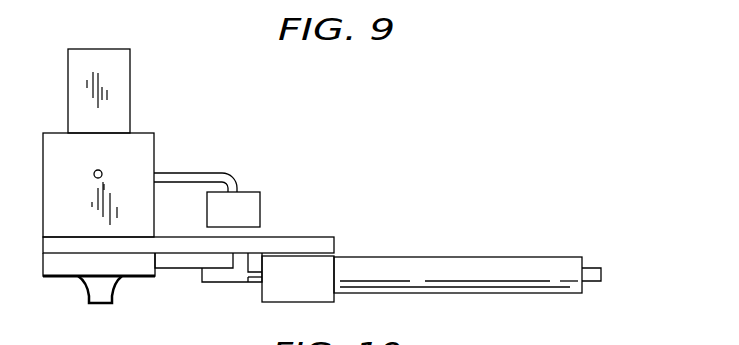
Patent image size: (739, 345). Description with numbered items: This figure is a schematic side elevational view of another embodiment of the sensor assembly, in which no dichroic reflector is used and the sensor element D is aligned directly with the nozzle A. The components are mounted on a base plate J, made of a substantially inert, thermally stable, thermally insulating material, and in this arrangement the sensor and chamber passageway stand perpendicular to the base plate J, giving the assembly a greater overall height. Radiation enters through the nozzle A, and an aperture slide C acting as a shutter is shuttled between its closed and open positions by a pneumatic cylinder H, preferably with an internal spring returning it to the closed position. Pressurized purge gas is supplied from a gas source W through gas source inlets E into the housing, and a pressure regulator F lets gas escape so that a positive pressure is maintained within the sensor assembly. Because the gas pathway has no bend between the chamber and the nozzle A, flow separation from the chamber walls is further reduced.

The nozzle A is at (102, 304).
The aperture slide C is at (175, 268).
The sensor element D is at (130, 73).
The gas source inlets E is at (194, 171).
The pressure regulator F is at (101, 171).
The pneumatic cylinder H is at (522, 257).
The base plate J is at (262, 244).
The gas source W is at (256, 191).